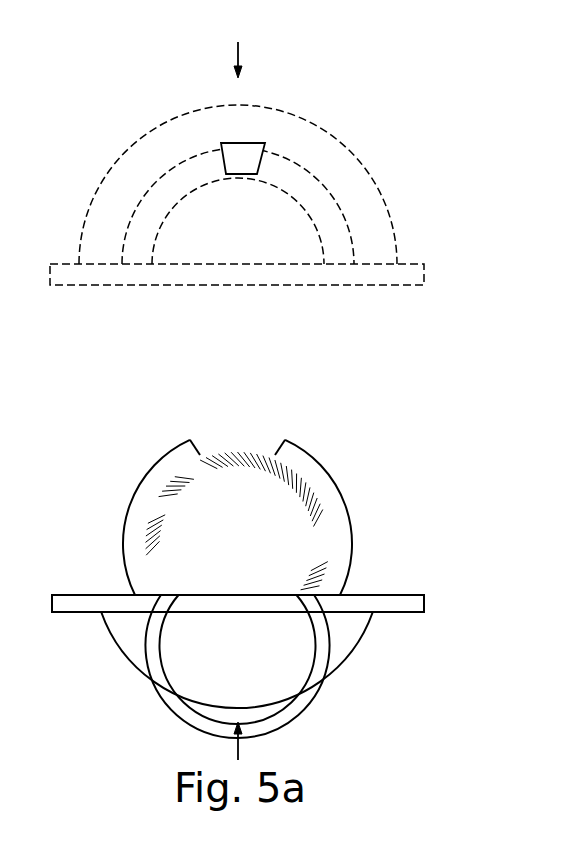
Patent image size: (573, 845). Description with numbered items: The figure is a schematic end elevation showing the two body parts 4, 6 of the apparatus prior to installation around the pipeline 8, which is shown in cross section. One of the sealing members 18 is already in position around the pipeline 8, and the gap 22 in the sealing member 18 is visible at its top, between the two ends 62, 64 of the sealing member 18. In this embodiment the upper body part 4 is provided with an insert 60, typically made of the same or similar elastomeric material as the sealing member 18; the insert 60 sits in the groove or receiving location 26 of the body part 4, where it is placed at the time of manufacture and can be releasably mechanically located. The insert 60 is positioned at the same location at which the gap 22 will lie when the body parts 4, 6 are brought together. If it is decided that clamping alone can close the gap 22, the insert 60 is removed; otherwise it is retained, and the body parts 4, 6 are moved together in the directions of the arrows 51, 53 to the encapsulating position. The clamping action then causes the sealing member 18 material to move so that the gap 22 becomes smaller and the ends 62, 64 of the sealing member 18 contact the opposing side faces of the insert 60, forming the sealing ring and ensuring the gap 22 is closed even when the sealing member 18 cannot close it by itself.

The body part 4 is at (345, 170).
The groove or receiving location 26 is at (335, 240).
The insert 60 is at (240, 155).
The arrow 53 is at (254, 60).
The sealing member 18 is at (347, 510).
The end of the sealing member 62 is at (190, 440).
The end of the sealing member 64 is at (285, 440).
The gap 22 is at (237, 440).
The pipeline 8 is at (323, 555).
The body part 6 is at (303, 675).
The arrow 51 is at (222, 742).